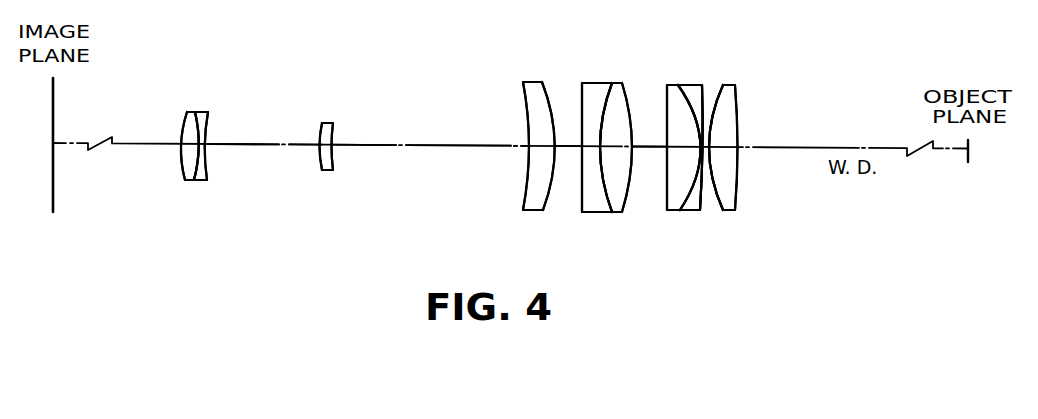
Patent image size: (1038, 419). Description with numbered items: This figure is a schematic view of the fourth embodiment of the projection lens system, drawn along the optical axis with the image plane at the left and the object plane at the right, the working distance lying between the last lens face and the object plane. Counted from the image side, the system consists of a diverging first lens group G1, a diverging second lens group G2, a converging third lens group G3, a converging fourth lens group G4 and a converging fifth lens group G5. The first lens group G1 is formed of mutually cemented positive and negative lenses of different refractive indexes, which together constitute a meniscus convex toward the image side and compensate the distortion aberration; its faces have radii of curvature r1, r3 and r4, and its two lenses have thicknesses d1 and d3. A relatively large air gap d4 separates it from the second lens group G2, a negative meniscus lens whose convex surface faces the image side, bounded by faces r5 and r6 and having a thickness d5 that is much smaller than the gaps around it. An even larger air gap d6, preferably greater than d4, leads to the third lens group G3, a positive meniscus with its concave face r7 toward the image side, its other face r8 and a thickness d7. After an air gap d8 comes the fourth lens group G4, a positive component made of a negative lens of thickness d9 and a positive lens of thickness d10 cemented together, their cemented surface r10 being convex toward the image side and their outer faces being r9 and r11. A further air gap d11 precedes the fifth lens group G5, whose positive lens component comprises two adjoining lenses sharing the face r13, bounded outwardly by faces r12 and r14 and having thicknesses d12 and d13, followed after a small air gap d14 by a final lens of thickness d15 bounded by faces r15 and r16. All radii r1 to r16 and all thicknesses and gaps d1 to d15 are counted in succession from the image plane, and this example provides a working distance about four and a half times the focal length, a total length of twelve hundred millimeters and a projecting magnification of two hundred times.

The first lens group G1 is at (223, 44).
The second lens group G2 is at (327, 122).
The third lens group G3 is at (537, 82).
The fourth lens group G4 is at (575, 44).
The fifth lens group G5 is at (658, 44).
The radius of curvature of first lens face r1 is at (180, 165).
The radius of curvature of third lens face r3 is at (193, 178).
The radius of curvature of fourth lens face r4 is at (204, 165).
The radius of curvature of fifth lens face r5 is at (322, 167).
The radius of curvature of sixth lens face r6 is at (334, 166).
The radius of curvature of seventh lens face r7 is at (523, 192).
The radius of curvature of eighth lens face r8 is at (547, 208).
The radius of curvature of ninth lens face r9 is at (582, 205).
The radius of curvature of tenth lens face r10 is at (609, 210).
The radius of curvature of eleventh lens face r11 is at (624, 210).
The radius of curvature of twelfth lens face r12 is at (667, 211).
The radius of curvature of thirteenth lens face r13 is at (680, 209).
The radius of curvature of fourteenth lens face r14 is at (701, 209).
The radius of curvature of fifteenth lens face r15 is at (722, 208).
The radius of curvature of sixteenth lens face r16 is at (738, 196).
The thickness of first lens d1 is at (183, 137).
The thickness of second lens of first group d3 is at (196, 136).
The air gap between first and second groups d4 is at (264, 132).
The thickness of negative meniscus lens d5 is at (330, 137).
The air gap between second and third groups d6 is at (431, 134).
The thickness of third group lens d7 is at (540, 145).
The air gap between third and fourth groups d8 is at (569, 133).
The thickness of negative lens of fourth group d9 is at (595, 138).
The thickness of positive lens of fourth group d10 is at (613, 148).
The air gap between fourth and fifth groups d11 is at (649, 134).
The thickness of first lens of fifth group d12 is at (673, 137).
The thickness of second lens of fifth group d13 is at (674, 155).
The air gap within fifth group d14 is at (705, 147).
The thickness of last lens d15 is at (726, 151).